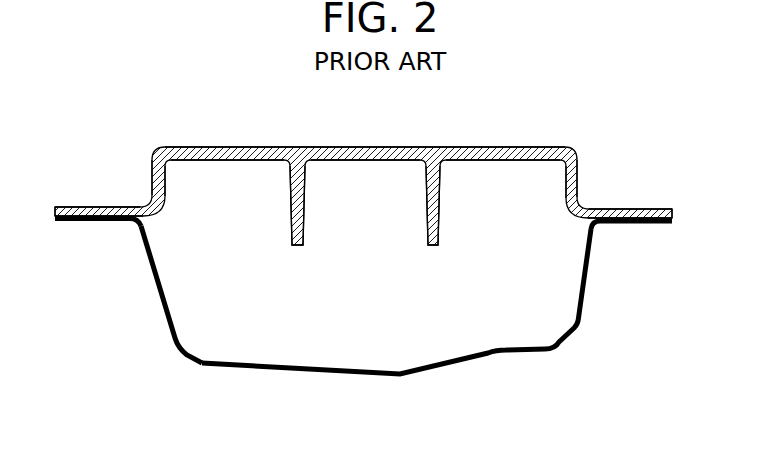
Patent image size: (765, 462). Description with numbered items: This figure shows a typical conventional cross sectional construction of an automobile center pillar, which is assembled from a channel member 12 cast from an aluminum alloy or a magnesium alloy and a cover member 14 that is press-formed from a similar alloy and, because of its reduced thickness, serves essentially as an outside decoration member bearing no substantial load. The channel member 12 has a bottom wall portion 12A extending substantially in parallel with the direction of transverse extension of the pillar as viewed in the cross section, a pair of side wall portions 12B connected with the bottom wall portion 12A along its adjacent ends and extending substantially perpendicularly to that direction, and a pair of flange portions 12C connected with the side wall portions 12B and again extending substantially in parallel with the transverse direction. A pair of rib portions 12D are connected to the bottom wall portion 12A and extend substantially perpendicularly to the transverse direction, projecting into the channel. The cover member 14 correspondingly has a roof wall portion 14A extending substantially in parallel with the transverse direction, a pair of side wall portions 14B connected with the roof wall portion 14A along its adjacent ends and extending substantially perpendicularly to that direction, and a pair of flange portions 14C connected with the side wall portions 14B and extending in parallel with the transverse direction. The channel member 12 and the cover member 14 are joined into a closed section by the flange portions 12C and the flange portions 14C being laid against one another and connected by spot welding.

The channel member 12 is at (275, 126).
The bottom wall portion 12A is at (372, 147).
The side wall portions 12B is at (165, 180).
The flange portions 12C is at (95, 206).
The rib portions 12D is at (291, 231).
The cover member 14 is at (363, 324).
The roof wall portion 14A is at (360, 377).
The side wall portions 14B is at (150, 292).
The flange portions 14C is at (73, 221).